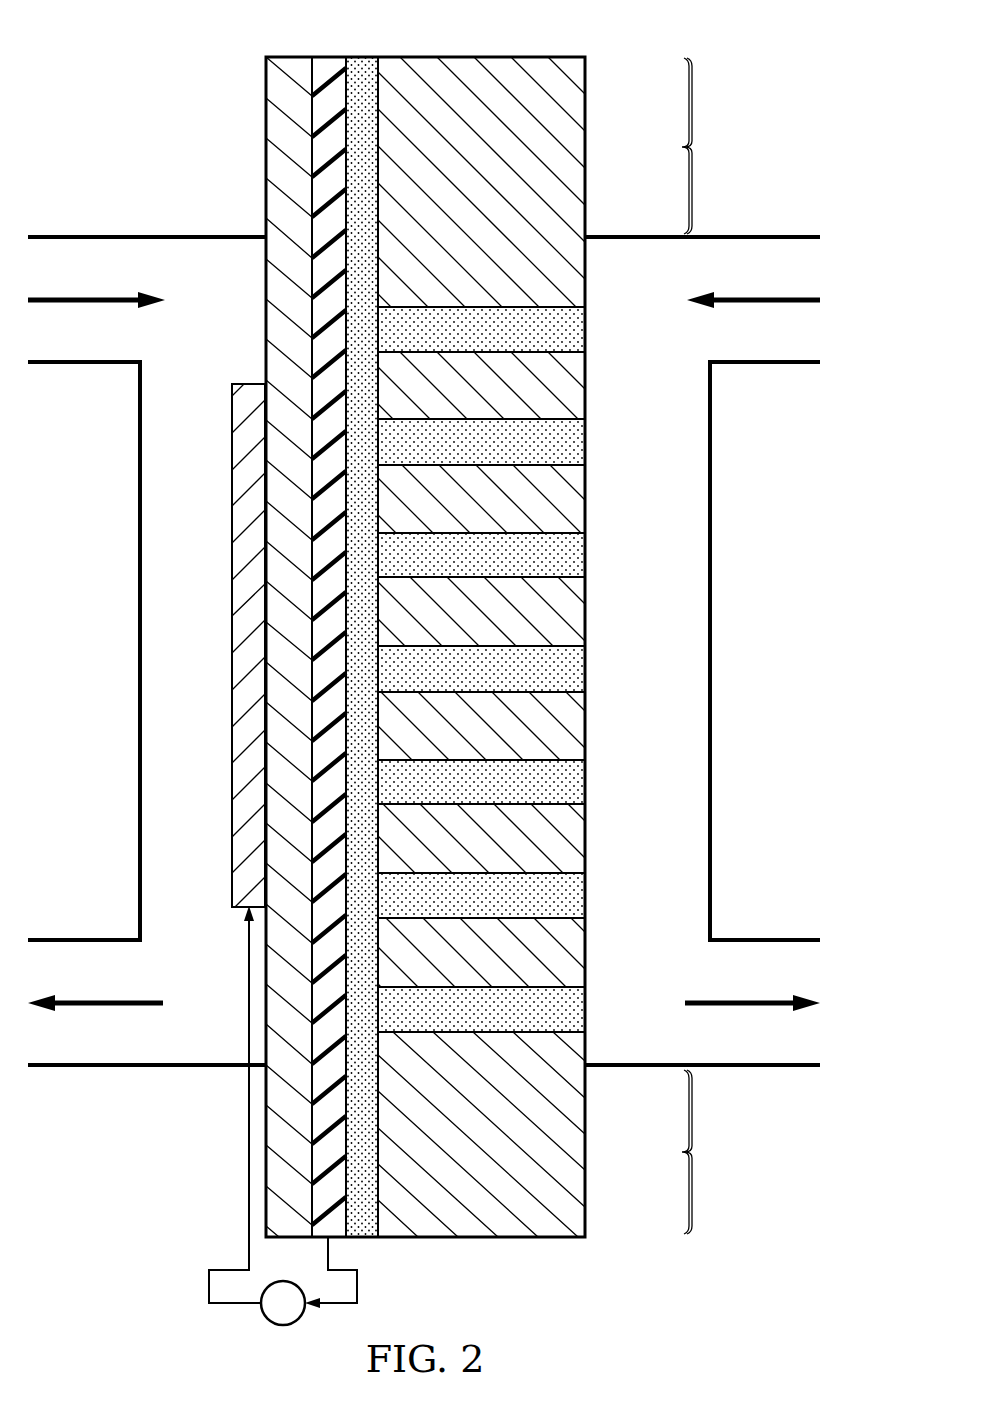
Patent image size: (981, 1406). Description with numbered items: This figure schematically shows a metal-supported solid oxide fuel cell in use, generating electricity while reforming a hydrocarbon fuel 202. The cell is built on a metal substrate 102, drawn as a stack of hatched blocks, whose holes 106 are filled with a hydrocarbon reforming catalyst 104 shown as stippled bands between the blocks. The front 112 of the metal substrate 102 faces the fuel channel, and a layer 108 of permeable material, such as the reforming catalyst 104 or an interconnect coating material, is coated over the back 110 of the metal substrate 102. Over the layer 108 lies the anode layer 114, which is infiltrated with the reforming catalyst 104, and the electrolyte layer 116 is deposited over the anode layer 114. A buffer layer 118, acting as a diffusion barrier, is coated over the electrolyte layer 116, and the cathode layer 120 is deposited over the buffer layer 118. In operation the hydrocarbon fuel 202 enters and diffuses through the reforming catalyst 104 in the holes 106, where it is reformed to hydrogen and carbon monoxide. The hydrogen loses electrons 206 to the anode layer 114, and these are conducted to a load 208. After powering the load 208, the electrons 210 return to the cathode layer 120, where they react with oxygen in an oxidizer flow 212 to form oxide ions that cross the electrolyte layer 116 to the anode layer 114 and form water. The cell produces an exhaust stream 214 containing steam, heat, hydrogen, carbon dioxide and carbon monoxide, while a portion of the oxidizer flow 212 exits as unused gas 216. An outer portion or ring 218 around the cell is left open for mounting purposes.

The metal substrate 102 is at (577, 1131).
The hydrocarbon reforming catalyst 104 is at (575, 670).
The holes 106 is at (598, 655).
The layer of permeable material 108 is at (362, 56).
The back of the metal substrate 110 is at (392, 100).
The front of the metal substrate 112 is at (598, 107).
The anode layer 114 is at (328, 56).
The electrolyte layer 116 is at (276, 56).
The buffer layer 118 is at (265, 163).
The cathode layer 120 is at (238, 626).
The hydrocarbon fuel 202 is at (765, 297).
The electrons 206 is at (357, 1290).
The load 208 is at (274, 1324).
The electrons 210 is at (209, 1290).
The oxidizer flow 212 is at (83, 297).
The exhaust stream 214 is at (743, 1001).
The unused gas 216 is at (108, 1001).
The outer portion or ring 218 is at (714, 646).